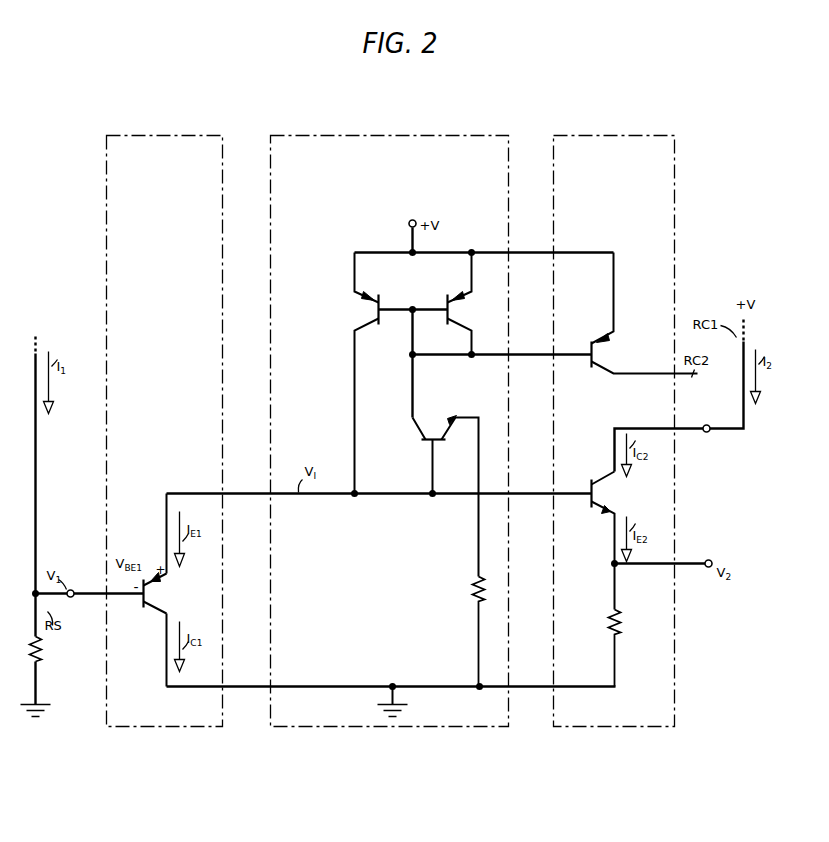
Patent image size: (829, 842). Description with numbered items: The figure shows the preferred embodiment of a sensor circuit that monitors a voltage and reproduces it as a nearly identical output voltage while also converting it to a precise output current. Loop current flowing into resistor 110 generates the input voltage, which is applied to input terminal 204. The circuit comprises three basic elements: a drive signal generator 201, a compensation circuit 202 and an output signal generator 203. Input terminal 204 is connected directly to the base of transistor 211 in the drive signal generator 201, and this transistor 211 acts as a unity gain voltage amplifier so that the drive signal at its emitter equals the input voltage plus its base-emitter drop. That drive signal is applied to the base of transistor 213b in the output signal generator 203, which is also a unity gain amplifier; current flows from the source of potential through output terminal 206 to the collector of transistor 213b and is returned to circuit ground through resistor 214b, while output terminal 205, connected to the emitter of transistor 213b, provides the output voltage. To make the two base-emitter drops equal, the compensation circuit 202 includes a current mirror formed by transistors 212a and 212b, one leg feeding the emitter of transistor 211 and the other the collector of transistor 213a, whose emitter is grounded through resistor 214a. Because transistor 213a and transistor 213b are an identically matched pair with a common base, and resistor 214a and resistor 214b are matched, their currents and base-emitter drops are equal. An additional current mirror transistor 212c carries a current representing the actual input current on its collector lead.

The resistor 110 is at (54, 649).
The drive signal generator 201 is at (194, 134).
The compensation circuit 202 is at (475, 134).
The output signal generator 203 is at (642, 134).
The input terminal 204 is at (71, 590).
The output terminal 205 is at (710, 558).
The output terminal 206 is at (709, 431).
The transistor 211 is at (170, 590).
The current mirror transistor 212a is at (362, 324).
The current mirror transistor 212b is at (466, 324).
The additional current mirror transistor 212c is at (603, 371).
The transistor 213a is at (433, 430).
The transistor 213b is at (618, 501).
The resistor 214a is at (463, 632).
The resistor 214b is at (600, 648).